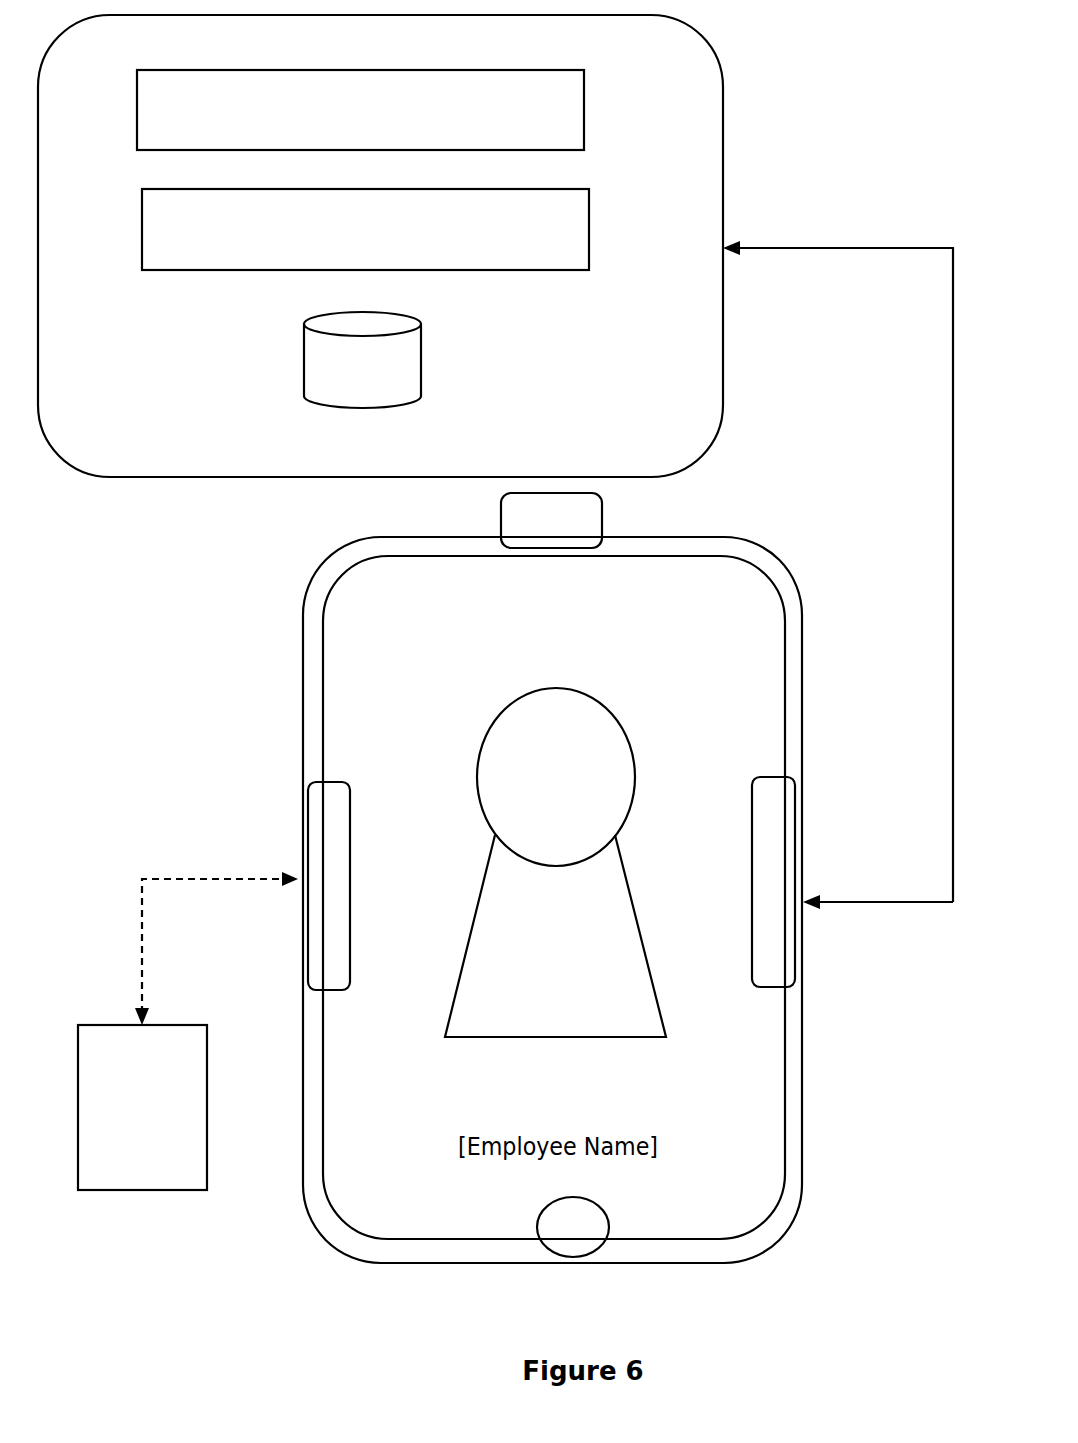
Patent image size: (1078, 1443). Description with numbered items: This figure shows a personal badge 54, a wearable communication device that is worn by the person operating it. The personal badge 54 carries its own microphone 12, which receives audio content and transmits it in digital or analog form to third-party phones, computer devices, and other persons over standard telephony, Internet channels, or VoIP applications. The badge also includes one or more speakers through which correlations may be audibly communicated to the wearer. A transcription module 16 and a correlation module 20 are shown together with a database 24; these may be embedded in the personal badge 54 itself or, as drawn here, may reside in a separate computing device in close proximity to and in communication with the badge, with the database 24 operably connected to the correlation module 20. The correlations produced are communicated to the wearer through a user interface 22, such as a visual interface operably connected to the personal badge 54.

The microphone 12 is at (573, 1227).
The transcription module 16 is at (386, 110).
The correlation module 20 is at (389, 229).
The user interface 22 is at (142, 1107).
The database 24 is at (362, 360).
The personal badge 54 is at (758, 521).